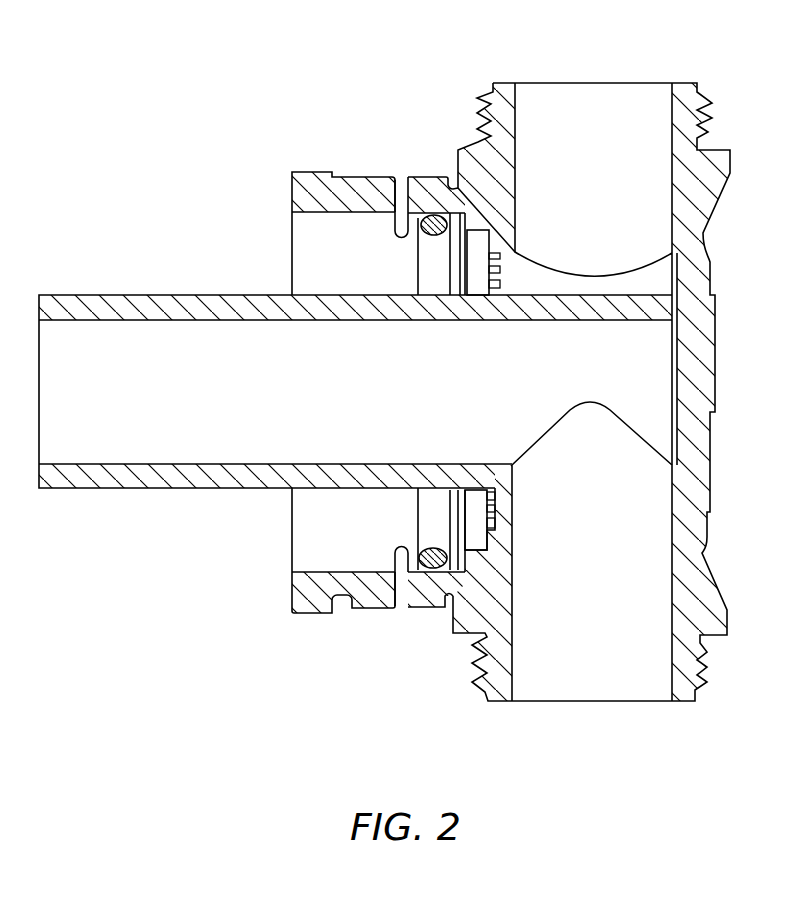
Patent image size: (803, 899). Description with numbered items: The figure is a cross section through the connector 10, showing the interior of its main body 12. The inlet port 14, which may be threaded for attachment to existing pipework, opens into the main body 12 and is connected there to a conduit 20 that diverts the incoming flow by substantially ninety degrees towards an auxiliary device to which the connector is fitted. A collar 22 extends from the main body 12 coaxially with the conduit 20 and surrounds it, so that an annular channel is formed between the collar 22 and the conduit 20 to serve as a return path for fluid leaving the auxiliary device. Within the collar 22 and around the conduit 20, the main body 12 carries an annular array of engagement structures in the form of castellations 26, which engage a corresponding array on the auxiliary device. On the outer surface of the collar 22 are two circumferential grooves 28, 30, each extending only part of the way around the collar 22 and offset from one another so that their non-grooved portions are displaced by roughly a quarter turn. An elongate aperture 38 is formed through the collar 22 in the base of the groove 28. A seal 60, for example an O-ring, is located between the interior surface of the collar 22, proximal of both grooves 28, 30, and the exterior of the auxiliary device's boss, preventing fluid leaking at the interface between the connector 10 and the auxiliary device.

The connector 10 is at (259, 81).
The main body 12 is at (710, 268).
The inlet port 14 is at (590, 702).
The conduit 20 is at (592, 82).
The collar 22 is at (315, 172).
The castellations 26 is at (483, 507).
The circumferential groove 28 is at (399, 177).
The circumferential groove 30 is at (311, 613).
The elongate aperture 38 is at (390, 228).
The seal 60 is at (430, 215).